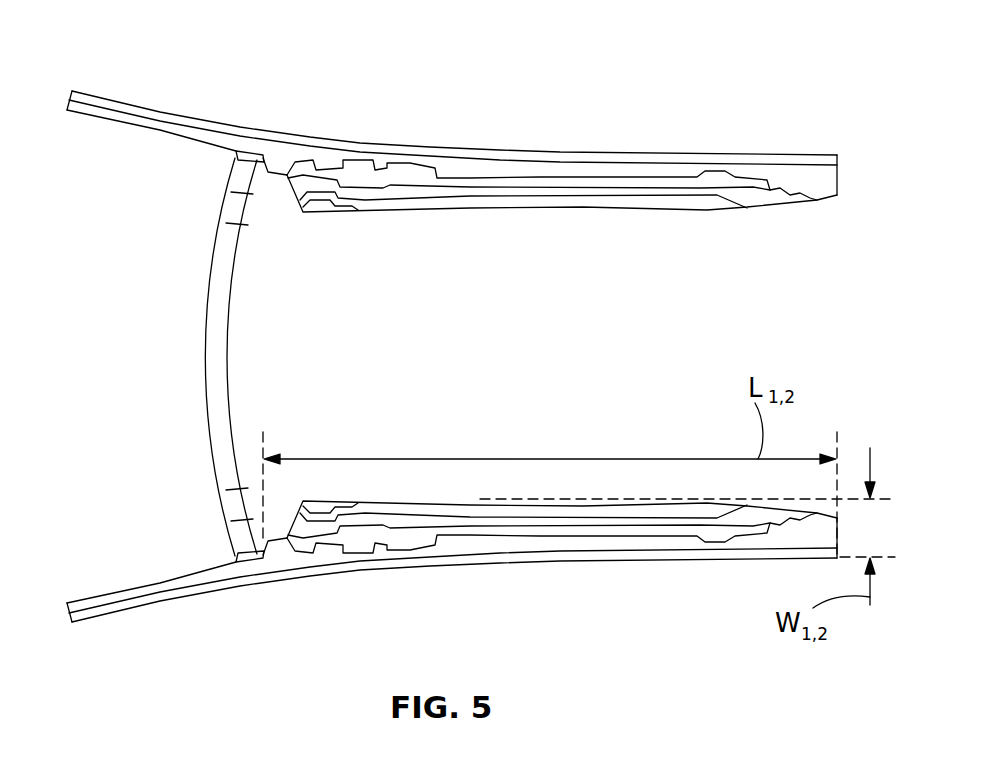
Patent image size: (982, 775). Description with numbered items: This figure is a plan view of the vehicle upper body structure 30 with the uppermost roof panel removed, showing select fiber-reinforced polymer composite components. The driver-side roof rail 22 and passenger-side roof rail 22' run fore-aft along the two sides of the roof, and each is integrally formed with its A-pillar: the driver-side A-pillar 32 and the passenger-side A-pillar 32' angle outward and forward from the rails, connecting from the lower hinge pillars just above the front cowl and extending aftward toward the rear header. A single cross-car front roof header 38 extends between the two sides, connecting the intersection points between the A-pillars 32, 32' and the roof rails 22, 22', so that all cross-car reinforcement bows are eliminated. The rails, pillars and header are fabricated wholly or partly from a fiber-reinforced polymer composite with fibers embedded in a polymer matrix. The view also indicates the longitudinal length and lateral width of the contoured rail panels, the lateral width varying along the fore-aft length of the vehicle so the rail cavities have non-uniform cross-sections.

The upper body structure 30 is at (306, 86).
The driver-side roof rail 22 is at (562, 578).
The passenger-side roof rail 22' is at (562, 138).
The driver-side A-pillar 32 is at (452, 564).
The passenger-side A-pillar 32' is at (452, 151).
The cross-car front roof header 38 is at (204, 356).